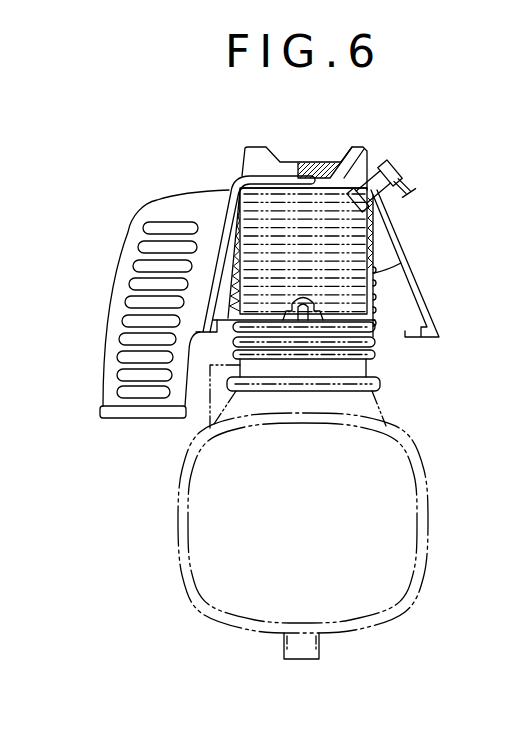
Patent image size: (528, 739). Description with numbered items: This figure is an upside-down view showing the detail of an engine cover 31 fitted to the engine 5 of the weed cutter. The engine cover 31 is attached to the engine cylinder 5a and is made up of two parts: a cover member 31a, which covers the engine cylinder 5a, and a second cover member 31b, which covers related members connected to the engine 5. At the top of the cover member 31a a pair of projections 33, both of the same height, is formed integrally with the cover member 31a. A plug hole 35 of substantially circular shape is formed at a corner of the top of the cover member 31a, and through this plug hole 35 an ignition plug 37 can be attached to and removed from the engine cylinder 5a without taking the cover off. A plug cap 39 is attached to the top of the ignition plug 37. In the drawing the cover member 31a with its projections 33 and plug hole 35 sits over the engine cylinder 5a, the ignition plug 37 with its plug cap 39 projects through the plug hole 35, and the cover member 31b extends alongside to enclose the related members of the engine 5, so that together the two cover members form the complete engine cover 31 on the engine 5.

The engine 5 is at (428, 488).
The engine cylinder 5a is at (352, 362).
The engine cover 31 is at (116, 265).
The cover member 31a is at (222, 220).
The cover member 31b is at (108, 345).
The projections 33 is at (338, 158).
The plug hole 35 is at (393, 211).
The ignition plug 37 is at (374, 184).
The plug cap 39 is at (397, 167).